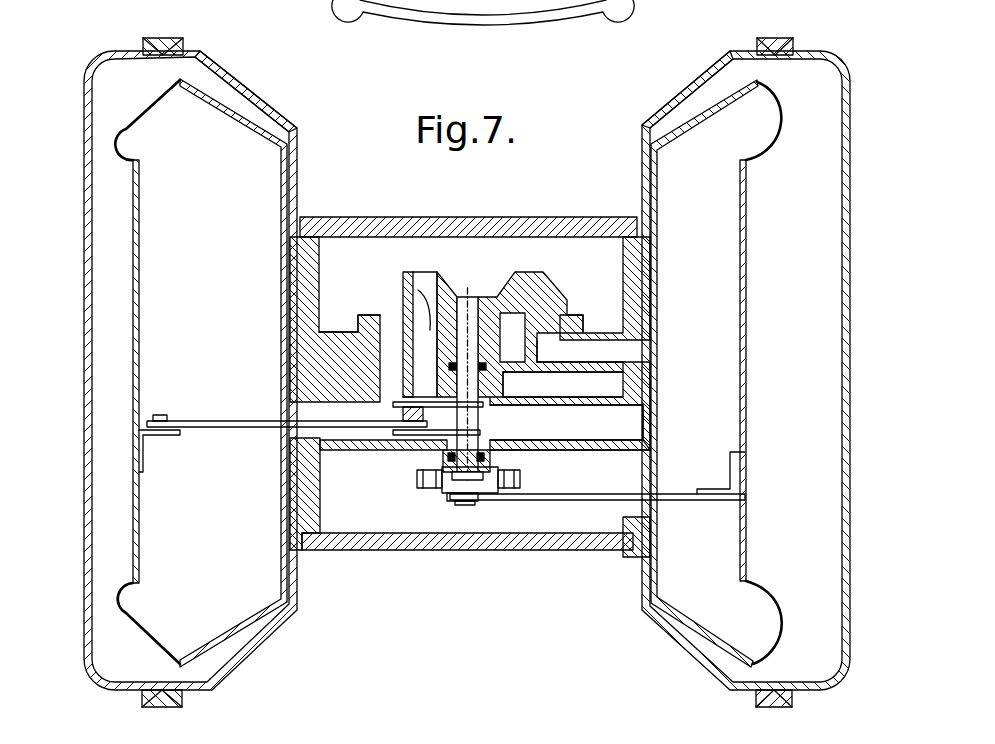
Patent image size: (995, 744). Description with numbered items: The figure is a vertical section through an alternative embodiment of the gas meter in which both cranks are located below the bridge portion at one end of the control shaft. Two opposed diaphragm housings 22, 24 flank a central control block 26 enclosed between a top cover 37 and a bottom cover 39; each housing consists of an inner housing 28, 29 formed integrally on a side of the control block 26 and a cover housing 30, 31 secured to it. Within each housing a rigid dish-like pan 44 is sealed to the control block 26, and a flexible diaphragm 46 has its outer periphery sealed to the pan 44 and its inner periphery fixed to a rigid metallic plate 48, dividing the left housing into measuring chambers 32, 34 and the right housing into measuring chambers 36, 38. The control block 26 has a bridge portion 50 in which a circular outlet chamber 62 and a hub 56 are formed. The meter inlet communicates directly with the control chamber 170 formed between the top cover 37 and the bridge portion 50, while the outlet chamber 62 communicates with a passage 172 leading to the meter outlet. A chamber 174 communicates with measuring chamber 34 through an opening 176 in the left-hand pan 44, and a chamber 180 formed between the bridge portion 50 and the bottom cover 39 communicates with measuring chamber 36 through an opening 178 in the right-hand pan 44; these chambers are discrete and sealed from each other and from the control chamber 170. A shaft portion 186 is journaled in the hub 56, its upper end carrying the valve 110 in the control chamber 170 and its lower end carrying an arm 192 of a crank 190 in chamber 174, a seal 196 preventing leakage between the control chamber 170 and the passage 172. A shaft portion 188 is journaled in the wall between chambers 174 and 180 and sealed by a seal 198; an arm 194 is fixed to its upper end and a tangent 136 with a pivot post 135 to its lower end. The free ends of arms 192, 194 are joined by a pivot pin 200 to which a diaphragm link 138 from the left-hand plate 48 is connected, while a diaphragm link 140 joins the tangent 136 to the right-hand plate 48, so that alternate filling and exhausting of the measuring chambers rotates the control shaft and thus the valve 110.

The diaphragm housing 22 is at (157, 37).
The diaphragm housing 24 is at (777, 36).
The control block 26 is at (318, 258).
The inner housing 28 is at (253, 86).
The inner housing 29 is at (692, 80).
The cover housing 30 is at (98, 61).
The cover housing 31 is at (842, 70).
The measuring chamber 32 is at (465, 373).
The measuring chamber 34 is at (223, 336).
The measuring chamber 36 is at (710, 293).
The top cover 37 is at (585, 227).
The measuring chamber 38 is at (803, 301).
The bottom cover 39 is at (554, 546).
The pan 44 is at (253, 131).
The diaphragm 46 is at (131, 133).
The plate 48 is at (139, 236).
The bridge portion 50 is at (349, 299).
The hub 56 is at (568, 308).
The outlet chamber 62 is at (425, 340).
The valve 110 is at (528, 272).
The pivot post 135 is at (453, 503).
The tangent 136 is at (460, 502).
The diaphragm link 138 is at (238, 421).
The diaphragm link 140 is at (617, 497).
The control chamber 170 is at (393, 264).
The passage 172 is at (653, 377).
The chamber 174 is at (628, 424).
The opening 176 is at (281, 437).
The opening 178 is at (660, 517).
The chamber 180 is at (362, 528).
The shaft portion 186 is at (470, 297).
The shaft portion 188 is at (470, 465).
The crank 190 is at (493, 410).
The arm 192 is at (505, 393).
The arm 194 is at (396, 432).
The seal 196 is at (495, 348).
The seal 198 is at (447, 457).
The pivot pin 200 is at (397, 413).